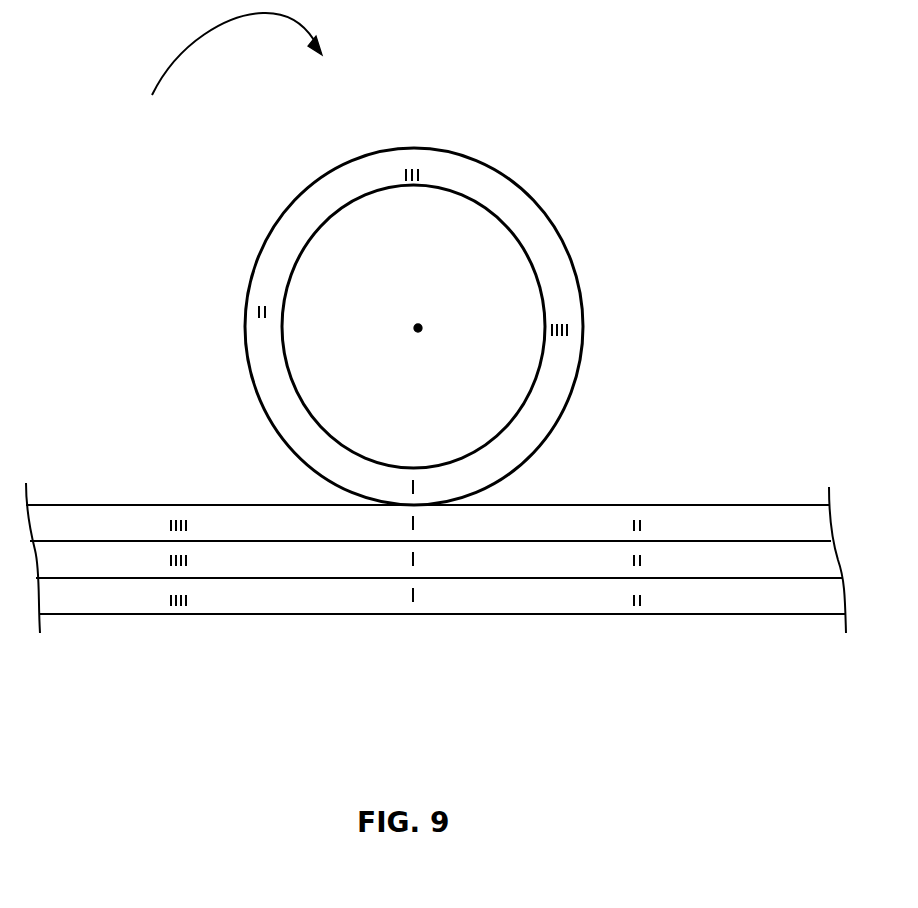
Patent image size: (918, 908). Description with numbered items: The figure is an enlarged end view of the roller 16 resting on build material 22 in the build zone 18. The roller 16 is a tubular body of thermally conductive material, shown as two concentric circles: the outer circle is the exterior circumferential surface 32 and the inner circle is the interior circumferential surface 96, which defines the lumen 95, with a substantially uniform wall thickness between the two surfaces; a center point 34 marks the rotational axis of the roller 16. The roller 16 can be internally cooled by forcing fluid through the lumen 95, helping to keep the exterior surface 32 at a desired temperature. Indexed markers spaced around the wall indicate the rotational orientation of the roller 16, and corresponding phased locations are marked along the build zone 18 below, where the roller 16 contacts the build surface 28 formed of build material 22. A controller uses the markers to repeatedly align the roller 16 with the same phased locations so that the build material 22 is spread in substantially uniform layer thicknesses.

The roller 16 is at (581, 169).
The build zone 18 is at (403, 730).
The build material 22 is at (508, 523).
The build surface 28 is at (655, 505).
The exterior circumferential surface 32 is at (280, 215).
The center axis 34 is at (418, 330).
The lumen 95 is at (424, 251).
The interior circumferential surface 96 is at (522, 402).